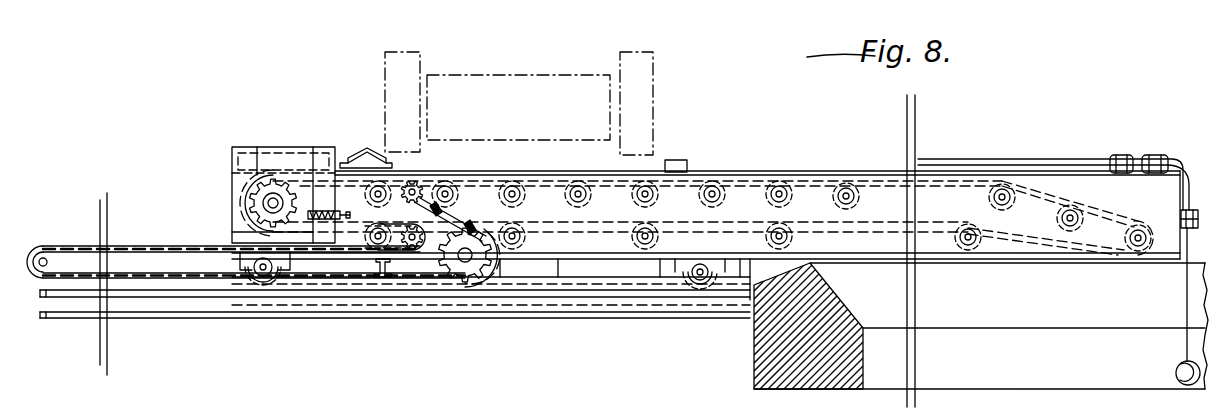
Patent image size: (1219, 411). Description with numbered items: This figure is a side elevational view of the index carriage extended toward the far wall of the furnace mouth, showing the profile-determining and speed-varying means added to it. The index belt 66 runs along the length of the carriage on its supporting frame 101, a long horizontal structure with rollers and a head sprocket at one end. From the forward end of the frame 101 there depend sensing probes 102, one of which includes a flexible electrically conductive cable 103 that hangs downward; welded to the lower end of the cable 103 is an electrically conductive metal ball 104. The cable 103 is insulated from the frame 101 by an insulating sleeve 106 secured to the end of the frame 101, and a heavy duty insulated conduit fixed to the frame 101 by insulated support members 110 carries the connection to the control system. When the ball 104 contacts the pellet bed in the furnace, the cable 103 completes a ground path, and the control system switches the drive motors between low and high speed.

The index belt 66 is at (1020, 243).
The supporting frame 101 is at (1080, 187).
The sensing probe 102 is at (1195, 314).
The flexible electrically conductive cable 103 is at (1186, 302).
The electrically conductive metal ball 104 is at (1176, 373).
The insulating sleeve 106 is at (1187, 243).
The insulated support member 110 is at (1147, 154).